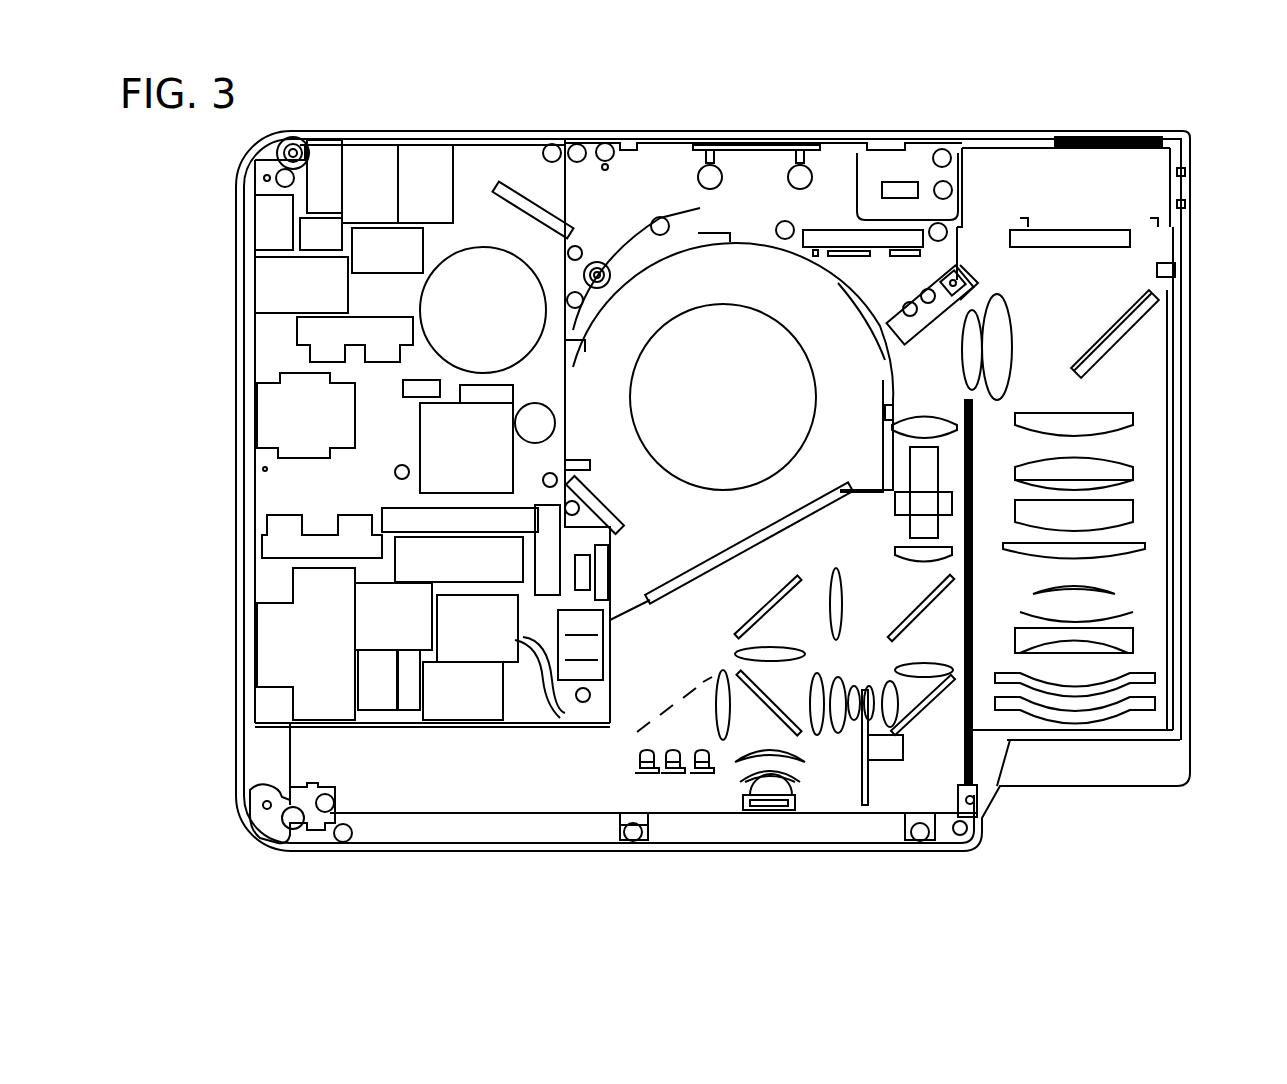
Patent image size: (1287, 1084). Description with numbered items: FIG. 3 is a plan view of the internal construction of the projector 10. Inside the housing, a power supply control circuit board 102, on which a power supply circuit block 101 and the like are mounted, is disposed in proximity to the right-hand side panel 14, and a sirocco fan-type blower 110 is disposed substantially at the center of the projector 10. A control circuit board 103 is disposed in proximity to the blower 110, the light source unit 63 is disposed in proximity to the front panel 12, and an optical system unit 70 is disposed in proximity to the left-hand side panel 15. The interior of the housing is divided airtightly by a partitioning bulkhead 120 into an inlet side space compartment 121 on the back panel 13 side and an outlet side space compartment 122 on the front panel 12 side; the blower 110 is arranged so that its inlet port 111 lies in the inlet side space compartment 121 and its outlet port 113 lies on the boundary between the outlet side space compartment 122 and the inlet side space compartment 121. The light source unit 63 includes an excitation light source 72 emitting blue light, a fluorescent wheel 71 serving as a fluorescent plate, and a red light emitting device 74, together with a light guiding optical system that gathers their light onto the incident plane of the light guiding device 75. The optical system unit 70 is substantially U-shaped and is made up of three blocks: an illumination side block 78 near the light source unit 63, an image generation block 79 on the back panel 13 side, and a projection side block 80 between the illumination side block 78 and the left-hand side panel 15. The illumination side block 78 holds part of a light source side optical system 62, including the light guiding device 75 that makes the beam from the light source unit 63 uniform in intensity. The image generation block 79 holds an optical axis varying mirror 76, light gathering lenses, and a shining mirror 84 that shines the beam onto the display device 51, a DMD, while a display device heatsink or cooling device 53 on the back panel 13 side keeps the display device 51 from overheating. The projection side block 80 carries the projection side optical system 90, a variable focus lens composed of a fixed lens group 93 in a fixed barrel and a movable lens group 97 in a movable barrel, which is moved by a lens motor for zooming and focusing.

The projector 10 is at (1196, 124).
The front panel 12 is at (493, 852).
The back panel 13 is at (511, 133).
The right-hand side panel 14 is at (243, 543).
The left-hand side panel 15 is at (1185, 290).
The display device 51 is at (1100, 230).
The display device heatsink or cooling device 53 is at (1002, 180).
The light source side optical system 62 is at (897, 402).
The light source unit 63 is at (914, 752).
The optical system unit 70 is at (1136, 384).
The fluorescent wheel 71 is at (856, 789).
The excitation light source 72 is at (674, 780).
The light emitting device 74 is at (768, 816).
The light guiding device 75 is at (885, 398).
The optical axis varying mirror 76 is at (918, 396).
The illumination side block 78 is at (951, 458).
The image generation block 79 is at (981, 251).
The projection side block 80 is at (1130, 612).
The shining mirror 84 is at (1117, 335).
The projection side optical system 90 is at (1132, 562).
The fixed lens group 93 is at (1109, 492).
The movable lens group 97 is at (1142, 683).
The power supply circuit block 101 is at (290, 290).
The power supply control circuit board 102 is at (280, 583).
The control circuit board 103 is at (598, 185).
The sirocco fan-type blower 110 is at (690, 270).
The inlet port 111 is at (745, 335).
The outlet port 113 is at (683, 585).
The partitioning bulkhead 120 is at (309, 738).
The inlet side space compartment 121 is at (657, 182).
The outlet side space compartment 122 is at (426, 797).